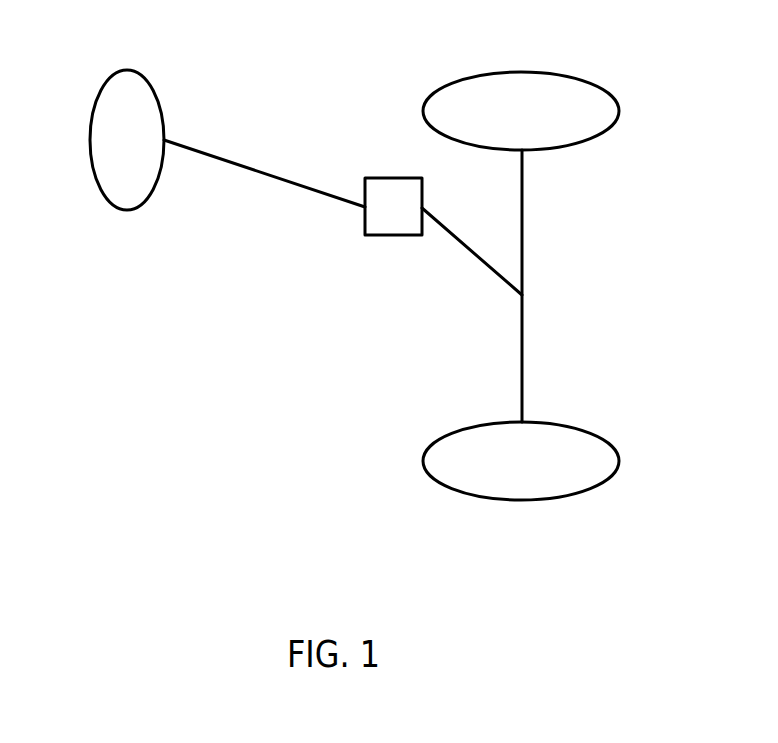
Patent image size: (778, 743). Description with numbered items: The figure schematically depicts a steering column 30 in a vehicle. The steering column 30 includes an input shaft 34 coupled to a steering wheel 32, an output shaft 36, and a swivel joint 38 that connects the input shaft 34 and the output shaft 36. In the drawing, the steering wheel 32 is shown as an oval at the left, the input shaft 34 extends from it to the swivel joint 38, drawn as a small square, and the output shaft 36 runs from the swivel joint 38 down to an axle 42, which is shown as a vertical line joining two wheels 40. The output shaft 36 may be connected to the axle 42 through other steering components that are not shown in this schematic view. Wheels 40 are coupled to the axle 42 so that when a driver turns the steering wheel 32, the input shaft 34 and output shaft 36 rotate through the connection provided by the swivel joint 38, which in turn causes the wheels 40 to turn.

The steering column 30 is at (134, 356).
The steering wheel 32 is at (122, 72).
The input shaft 34 is at (258, 177).
The output shaft 36 is at (475, 259).
The swivel joint 38 is at (382, 226).
The wheels 40 is at (463, 95).
The axle 42 is at (523, 355).